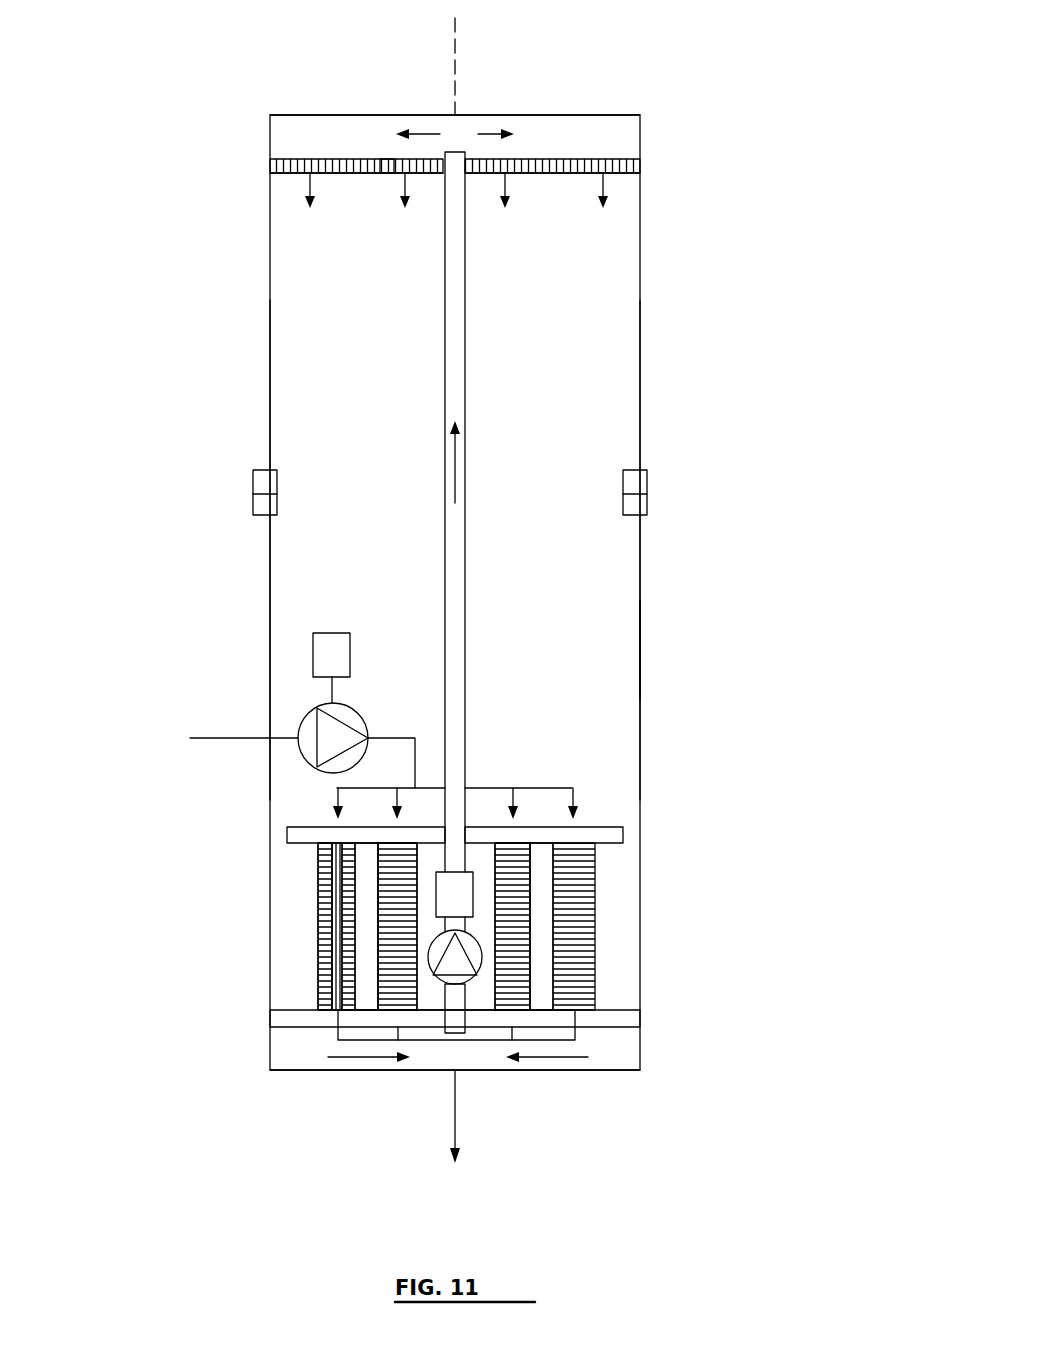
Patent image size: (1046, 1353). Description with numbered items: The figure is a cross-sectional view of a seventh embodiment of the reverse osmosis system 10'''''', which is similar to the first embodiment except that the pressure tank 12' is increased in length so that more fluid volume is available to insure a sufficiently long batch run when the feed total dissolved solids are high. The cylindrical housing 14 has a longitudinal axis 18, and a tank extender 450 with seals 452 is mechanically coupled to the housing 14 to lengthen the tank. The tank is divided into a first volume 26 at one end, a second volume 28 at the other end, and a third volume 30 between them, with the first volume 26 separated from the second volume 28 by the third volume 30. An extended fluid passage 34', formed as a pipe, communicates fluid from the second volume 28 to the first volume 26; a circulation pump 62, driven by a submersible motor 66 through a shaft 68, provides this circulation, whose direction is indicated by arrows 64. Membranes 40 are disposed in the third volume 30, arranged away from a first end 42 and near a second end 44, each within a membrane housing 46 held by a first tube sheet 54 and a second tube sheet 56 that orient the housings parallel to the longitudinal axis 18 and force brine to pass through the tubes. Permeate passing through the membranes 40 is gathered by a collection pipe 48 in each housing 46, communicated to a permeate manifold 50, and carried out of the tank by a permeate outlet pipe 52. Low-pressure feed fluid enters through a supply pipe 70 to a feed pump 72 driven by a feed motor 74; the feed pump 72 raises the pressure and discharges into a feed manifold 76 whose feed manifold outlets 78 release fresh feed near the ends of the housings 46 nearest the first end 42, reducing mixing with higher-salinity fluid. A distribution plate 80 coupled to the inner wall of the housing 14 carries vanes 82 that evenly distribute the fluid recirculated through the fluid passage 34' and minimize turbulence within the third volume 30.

The reverse osmosis system 10'''''' is at (161, 35).
The pressure tank 12' is at (490, 592).
The housing 14 is at (268, 594).
The longitudinal axis 18 is at (458, 40).
The first volume 26 is at (586, 130).
The second volume 28 is at (286, 1059).
The third volume 30 is at (625, 652).
The fluid passage 34' is at (495, 512).
The membranes 40 is at (322, 870).
The first end 42 is at (618, 206).
The second end 44 is at (617, 993).
The membrane housing 46 is at (595, 858).
The collection pipe 48 is at (341, 902).
The permeate manifold 50 is at (413, 1070).
The permeate outlet pipe 52 is at (458, 1133).
The first tube sheet 54 is at (622, 835).
The second tube sheet 56 is at (622, 1020).
The circulation pump 62 is at (480, 960).
The arrows 64 is at (424, 134).
The motor 66 is at (440, 872).
The shaft 68 is at (440, 928).
The low-pressure supply pipe 70 is at (220, 738).
The feed pump 72 is at (360, 712).
The feed motor 74 is at (313, 640).
The feed manifold 76 is at (406, 738).
The feed manifold outlets 78 is at (338, 795).
The distribution plate 80 is at (344, 162).
The vanes 82 is at (388, 170).
The tank extender 450 is at (642, 410).
The seals 452 is at (253, 507).